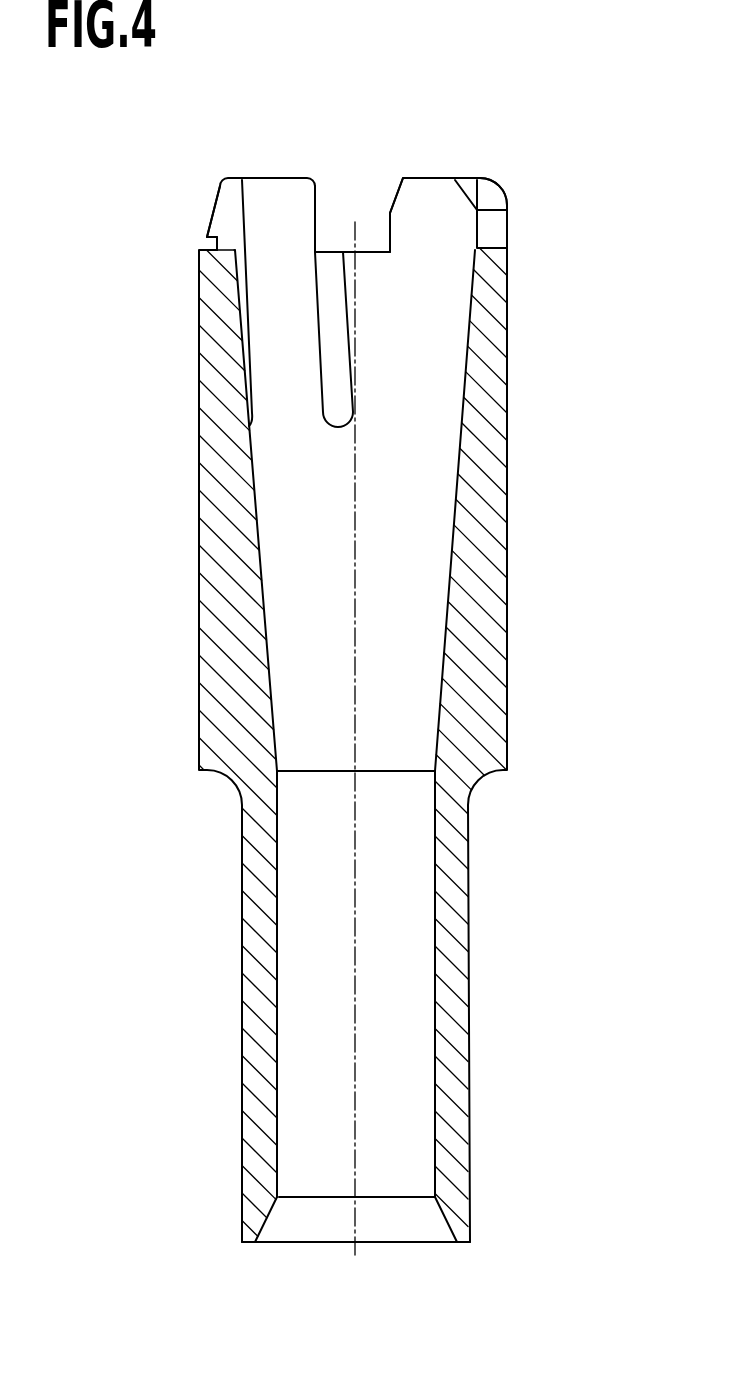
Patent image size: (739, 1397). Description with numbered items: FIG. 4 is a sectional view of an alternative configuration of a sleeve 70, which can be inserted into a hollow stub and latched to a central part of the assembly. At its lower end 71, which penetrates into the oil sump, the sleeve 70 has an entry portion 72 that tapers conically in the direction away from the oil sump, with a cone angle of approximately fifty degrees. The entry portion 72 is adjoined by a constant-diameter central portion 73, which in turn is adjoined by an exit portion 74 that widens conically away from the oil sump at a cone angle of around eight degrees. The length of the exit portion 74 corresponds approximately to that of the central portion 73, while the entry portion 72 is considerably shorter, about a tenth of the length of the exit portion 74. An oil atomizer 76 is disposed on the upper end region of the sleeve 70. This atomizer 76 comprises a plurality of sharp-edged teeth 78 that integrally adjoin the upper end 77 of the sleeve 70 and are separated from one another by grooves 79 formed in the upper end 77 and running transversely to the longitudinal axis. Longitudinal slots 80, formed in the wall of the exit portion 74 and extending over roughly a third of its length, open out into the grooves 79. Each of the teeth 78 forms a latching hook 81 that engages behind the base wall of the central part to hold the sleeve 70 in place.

The sleeve 70 is at (190, 711).
The lower end 71 is at (245, 1242).
The entry portion 72 is at (262, 1212).
The central portion 73 is at (423, 998).
The exit portion 74 is at (460, 413).
The oil atomizer 76 is at (520, 197).
The upper end 77 is at (478, 195).
The teeth 78 is at (281, 190).
The grooves 79 is at (378, 250).
The longitudinal slots 80 is at (330, 367).
The latching hook 81 is at (208, 236).